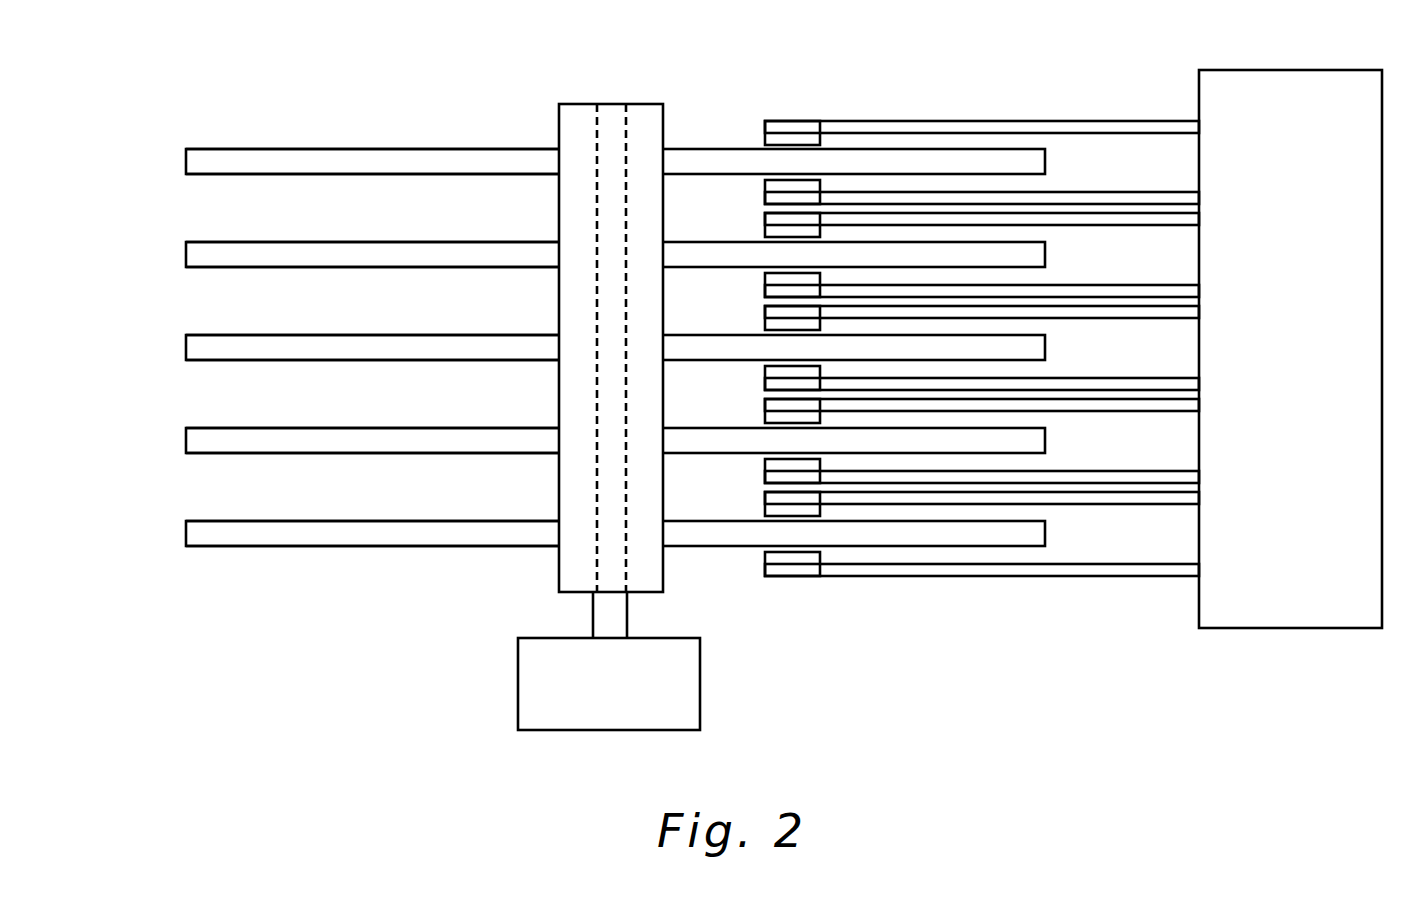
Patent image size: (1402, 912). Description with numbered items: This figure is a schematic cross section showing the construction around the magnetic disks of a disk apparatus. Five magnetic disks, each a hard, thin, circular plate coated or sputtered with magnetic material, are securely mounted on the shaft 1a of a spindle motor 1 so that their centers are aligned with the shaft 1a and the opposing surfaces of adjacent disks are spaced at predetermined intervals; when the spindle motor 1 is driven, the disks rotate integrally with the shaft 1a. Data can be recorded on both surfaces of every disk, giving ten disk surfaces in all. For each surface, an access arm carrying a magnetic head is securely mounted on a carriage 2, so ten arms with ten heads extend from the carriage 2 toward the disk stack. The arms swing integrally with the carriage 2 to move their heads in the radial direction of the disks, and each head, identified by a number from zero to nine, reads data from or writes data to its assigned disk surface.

The spindle motor 1 is at (700, 660).
The shaft 1a is at (593, 624).
The carriage 2 is at (1350, 70).